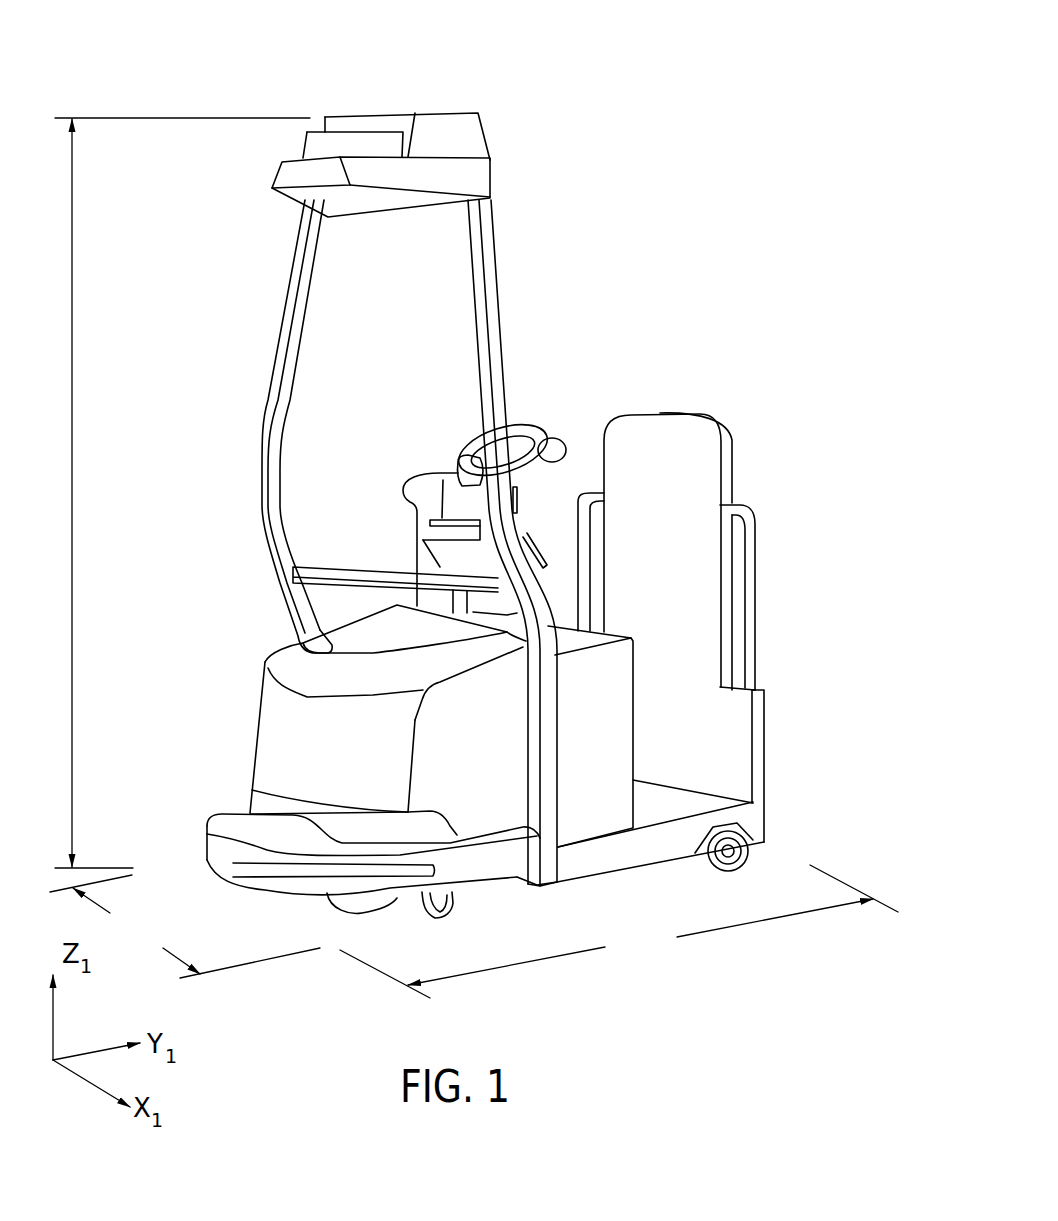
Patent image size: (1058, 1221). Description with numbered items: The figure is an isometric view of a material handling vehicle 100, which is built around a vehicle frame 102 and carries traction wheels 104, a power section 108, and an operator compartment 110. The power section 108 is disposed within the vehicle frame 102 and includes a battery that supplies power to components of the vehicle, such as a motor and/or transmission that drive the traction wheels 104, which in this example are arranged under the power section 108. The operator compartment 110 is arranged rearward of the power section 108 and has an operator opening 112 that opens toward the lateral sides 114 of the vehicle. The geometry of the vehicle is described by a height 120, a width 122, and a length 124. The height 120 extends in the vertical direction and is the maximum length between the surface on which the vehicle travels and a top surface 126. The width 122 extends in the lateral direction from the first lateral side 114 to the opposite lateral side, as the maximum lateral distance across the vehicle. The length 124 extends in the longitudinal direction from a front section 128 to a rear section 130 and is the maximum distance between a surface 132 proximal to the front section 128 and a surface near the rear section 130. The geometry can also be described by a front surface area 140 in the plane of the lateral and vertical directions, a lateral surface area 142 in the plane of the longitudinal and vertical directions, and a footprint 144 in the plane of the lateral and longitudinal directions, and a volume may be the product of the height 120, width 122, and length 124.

The material handling vehicle 100 is at (714, 120).
The vehicle frame 102 is at (272, 416).
The traction wheels 104 is at (447, 917).
The power section 108 is at (272, 722).
The operator compartment 110 is at (728, 596).
The operator opening 112 is at (560, 521).
The lateral sides 114 is at (607, 735).
The height 120 is at (179, 493).
The width 122 is at (185, 926).
The length 124 is at (619, 931).
The top surface 126 is at (438, 112).
The front section 128 is at (230, 658).
The rear section 130 is at (689, 393).
The surface proximal to the front section 132 is at (236, 848).
The front surface area 140 is at (192, 362).
The lateral surface area 142 is at (783, 850).
The footprint 144 is at (398, 908).